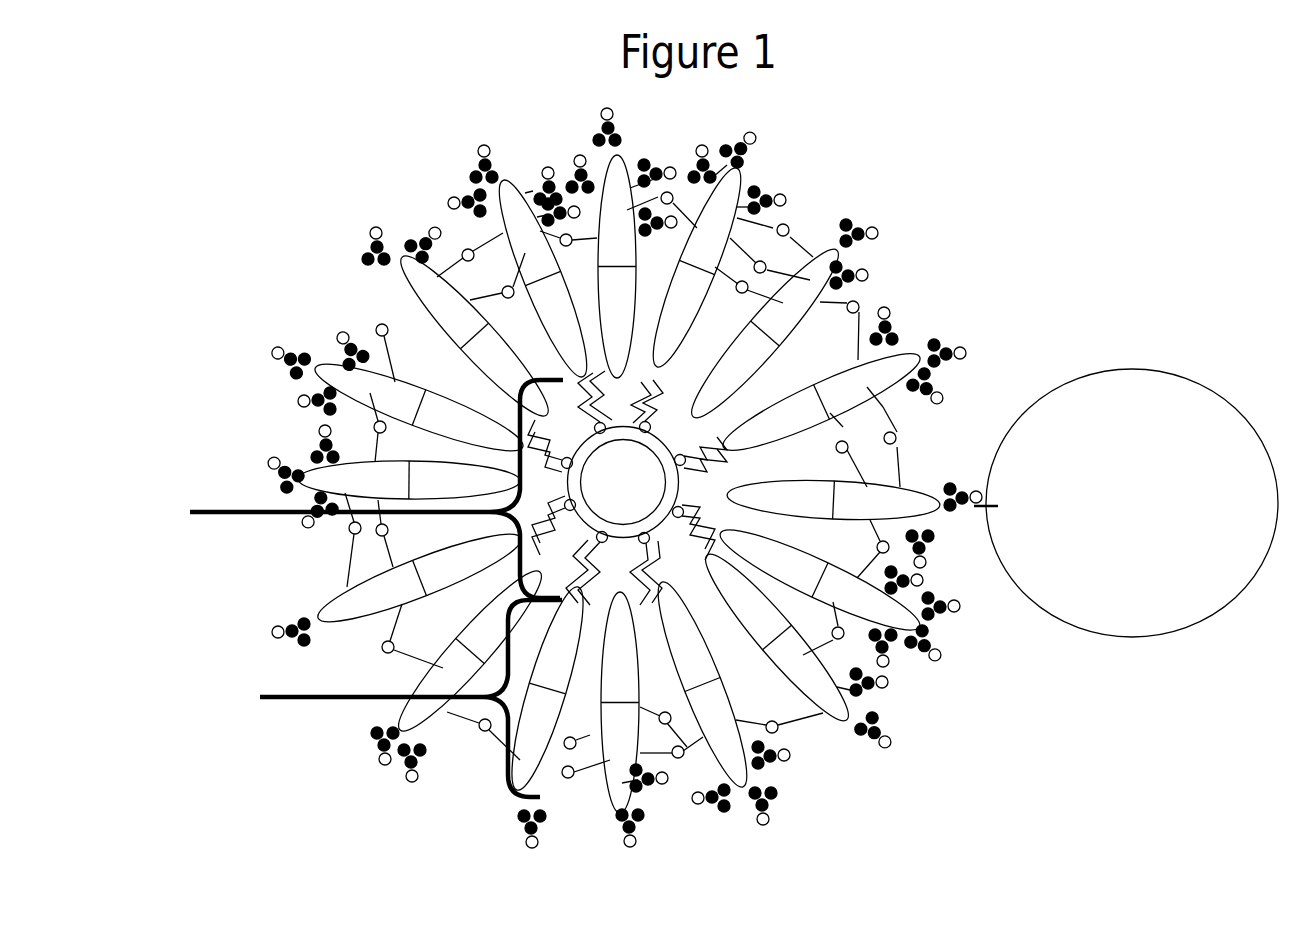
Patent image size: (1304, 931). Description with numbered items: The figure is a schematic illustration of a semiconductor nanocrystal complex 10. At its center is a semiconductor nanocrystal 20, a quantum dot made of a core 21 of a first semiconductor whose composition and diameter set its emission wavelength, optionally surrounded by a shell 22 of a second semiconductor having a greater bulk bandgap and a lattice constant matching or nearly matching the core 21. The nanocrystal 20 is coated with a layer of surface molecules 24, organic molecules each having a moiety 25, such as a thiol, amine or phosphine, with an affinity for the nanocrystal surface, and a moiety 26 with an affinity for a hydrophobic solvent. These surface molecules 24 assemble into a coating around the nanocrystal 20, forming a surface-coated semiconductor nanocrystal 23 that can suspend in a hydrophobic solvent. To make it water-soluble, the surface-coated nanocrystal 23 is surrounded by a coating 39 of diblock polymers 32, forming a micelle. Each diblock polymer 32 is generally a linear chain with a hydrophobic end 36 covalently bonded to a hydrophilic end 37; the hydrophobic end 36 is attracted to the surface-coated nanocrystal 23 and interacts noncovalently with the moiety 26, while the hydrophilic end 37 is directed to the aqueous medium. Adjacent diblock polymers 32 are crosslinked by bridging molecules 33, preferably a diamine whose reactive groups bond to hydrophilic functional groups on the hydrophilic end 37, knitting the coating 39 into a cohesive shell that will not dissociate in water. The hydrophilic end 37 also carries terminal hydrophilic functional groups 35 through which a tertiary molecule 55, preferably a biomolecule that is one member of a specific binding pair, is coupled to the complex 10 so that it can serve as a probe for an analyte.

The semiconductor nanocrystal complex 10 is at (400, 173).
The semiconductor nanocrystal 20 is at (617, 416).
The core 21 is at (623, 482).
The shell 22 is at (678, 492).
The surface-coated semiconductor nanocrystal 23 is at (352, 489).
The surface molecules 24 is at (750, 522).
The moiety 25 is at (680, 452).
The moiety 26 is at (627, 488).
The diblock polymer 32 is at (387, 698).
The bridging molecule 33 is at (846, 651).
The terminal hydrophilic functional groups 35 is at (903, 227).
The hydrophobic end 36 is at (770, 482).
The hydrophilic end 37 is at (831, 722).
The diblock polymer coating 39 is at (382, 291).
The tertiary molecule 55 is at (1132, 503).